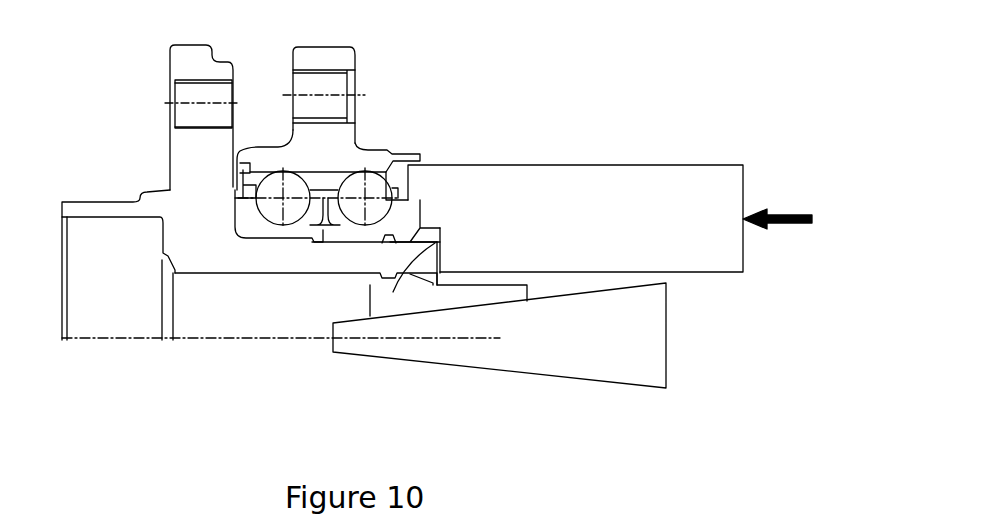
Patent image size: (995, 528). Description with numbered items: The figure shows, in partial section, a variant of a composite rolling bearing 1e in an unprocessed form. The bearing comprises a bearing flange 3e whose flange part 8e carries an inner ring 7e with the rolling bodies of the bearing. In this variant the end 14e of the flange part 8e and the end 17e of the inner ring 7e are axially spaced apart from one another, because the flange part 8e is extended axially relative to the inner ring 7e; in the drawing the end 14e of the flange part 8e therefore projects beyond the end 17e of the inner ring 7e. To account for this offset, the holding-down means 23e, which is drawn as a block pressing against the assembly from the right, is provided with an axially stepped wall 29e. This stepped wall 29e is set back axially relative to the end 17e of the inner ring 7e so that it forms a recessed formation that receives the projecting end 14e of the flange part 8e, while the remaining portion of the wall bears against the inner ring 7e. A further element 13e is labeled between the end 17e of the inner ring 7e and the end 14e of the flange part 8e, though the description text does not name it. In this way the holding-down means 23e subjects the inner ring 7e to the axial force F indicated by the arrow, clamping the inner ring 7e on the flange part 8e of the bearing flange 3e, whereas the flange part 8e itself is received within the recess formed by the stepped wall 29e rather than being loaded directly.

The composite rolling bearing 1e is at (437, 218).
The bearing flange 3e is at (183, 164).
The inner ring 7e is at (355, 233).
The flange part 8e is at (273, 265).
The spring element 13e is at (440, 232).
The end of the flange part 14e is at (438, 258).
The end of the inner ring 17e is at (430, 212).
The holding-down means 23e is at (567, 193).
The axially stepped wall 29e is at (432, 244).